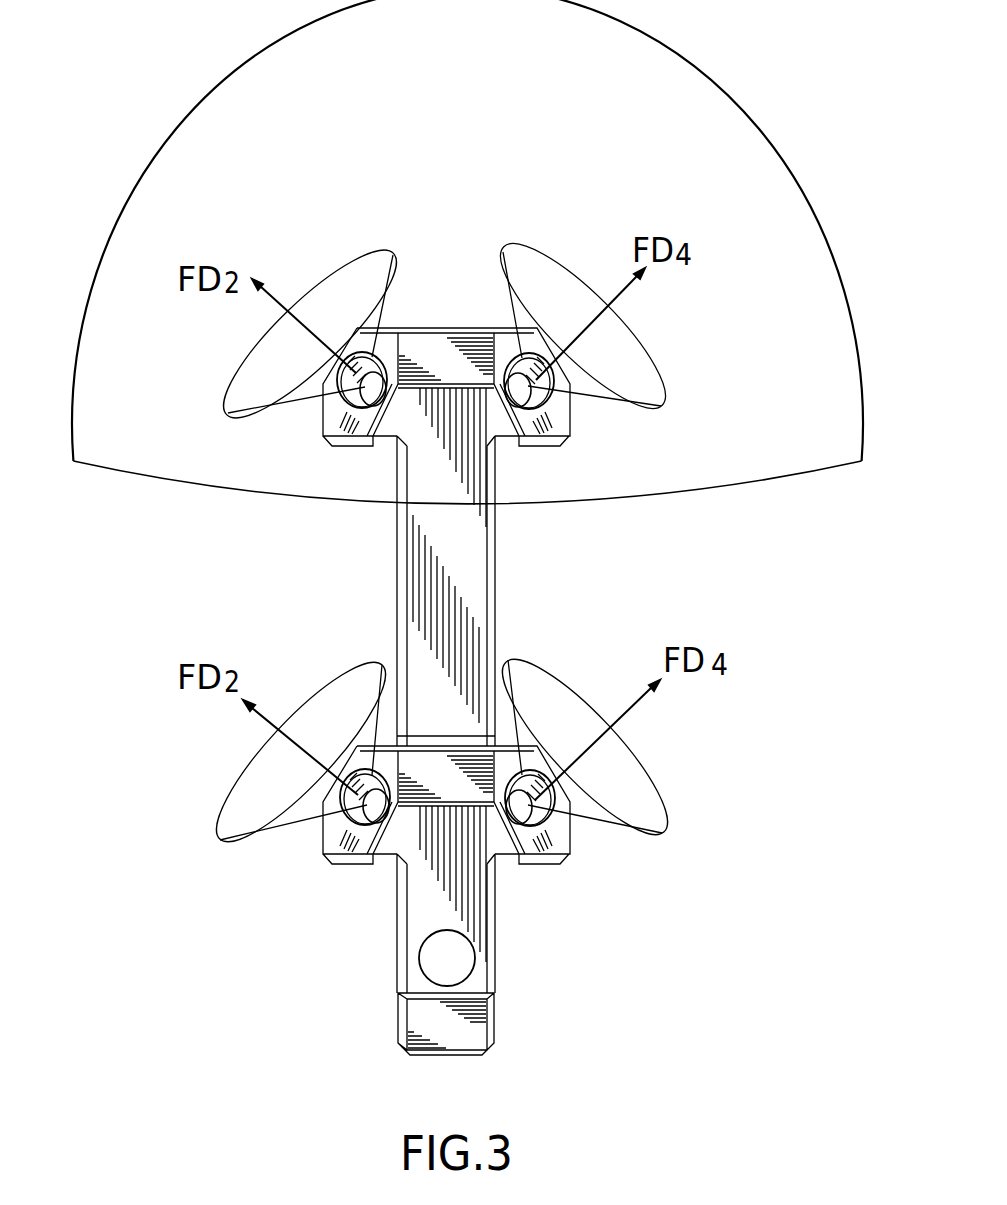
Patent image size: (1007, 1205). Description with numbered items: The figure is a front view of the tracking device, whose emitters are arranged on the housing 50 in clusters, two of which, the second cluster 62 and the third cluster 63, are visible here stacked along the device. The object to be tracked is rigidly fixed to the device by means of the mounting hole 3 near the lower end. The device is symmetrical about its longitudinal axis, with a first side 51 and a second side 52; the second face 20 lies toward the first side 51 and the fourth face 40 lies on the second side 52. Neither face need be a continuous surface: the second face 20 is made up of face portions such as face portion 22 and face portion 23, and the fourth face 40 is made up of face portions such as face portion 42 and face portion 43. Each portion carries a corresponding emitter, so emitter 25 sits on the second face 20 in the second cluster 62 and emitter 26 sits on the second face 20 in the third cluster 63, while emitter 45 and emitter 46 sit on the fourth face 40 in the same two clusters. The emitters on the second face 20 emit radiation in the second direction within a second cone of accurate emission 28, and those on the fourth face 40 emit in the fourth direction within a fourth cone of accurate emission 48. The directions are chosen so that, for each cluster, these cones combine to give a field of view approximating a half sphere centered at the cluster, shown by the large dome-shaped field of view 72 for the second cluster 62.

The field of view 72 is at (796, 152).
The second face 20 is at (185, 502).
The fourth face 40 is at (644, 523).
The housing 50 is at (411, 316).
The second side 52 is at (532, 940).
The first side 51 is at (346, 990).
The mounting hole 3 is at (488, 972).
The second cluster 62 is at (450, 419).
The third cluster 63 is at (349, 903).
The emitter 25 is at (358, 415).
The emitter 45 is at (566, 408).
The emitter 26 is at (354, 850).
The emitter 46 is at (567, 829).
The face portion 22 is at (327, 427).
The face portion 42 is at (549, 433).
The face portion 23 is at (330, 843).
The face portion 43 is at (546, 850).
The second cone of accurate emission 28 is at (213, 381).
The fourth cone of accurate emission 48 is at (666, 340).